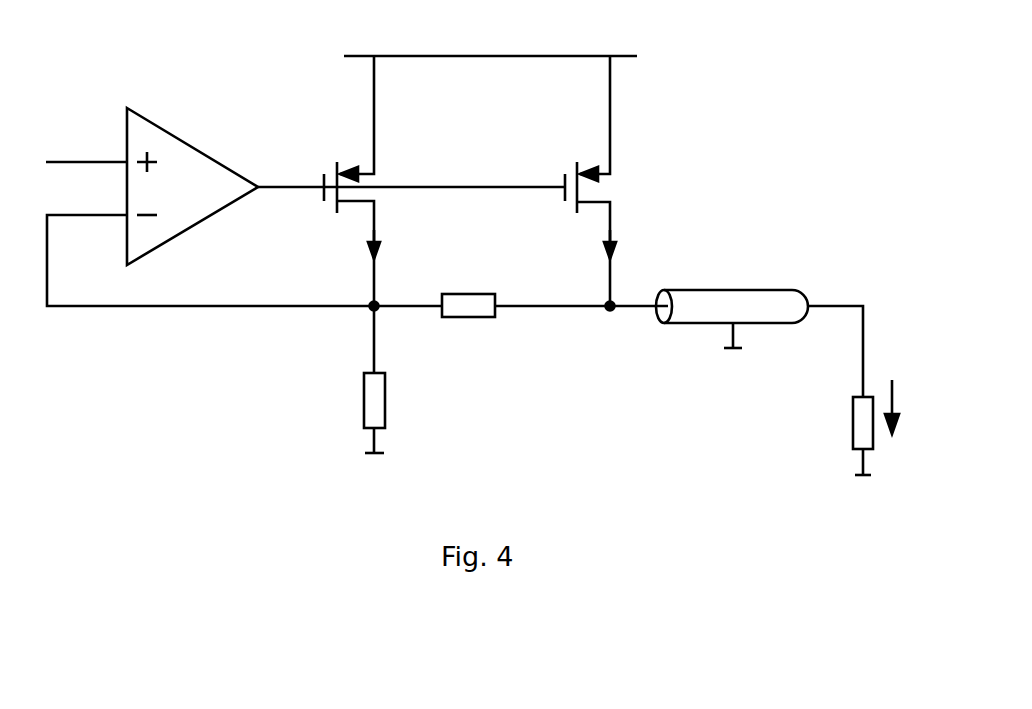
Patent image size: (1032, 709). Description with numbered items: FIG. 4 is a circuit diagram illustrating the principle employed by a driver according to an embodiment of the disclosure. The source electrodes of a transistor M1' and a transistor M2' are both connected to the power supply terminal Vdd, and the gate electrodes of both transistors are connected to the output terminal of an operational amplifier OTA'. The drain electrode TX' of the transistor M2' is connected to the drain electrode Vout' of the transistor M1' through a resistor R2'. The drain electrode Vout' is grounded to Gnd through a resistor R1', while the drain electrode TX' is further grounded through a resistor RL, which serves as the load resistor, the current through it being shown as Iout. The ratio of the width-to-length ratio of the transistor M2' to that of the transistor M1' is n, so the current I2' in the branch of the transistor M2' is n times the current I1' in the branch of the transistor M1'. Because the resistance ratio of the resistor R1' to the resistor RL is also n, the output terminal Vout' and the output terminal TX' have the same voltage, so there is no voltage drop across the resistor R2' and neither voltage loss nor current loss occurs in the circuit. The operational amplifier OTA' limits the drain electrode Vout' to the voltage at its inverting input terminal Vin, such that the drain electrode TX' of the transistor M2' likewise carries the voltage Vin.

The operational amplifier OTA' is at (225, 186).
The inverting input terminal Vin is at (76, 149).
The power supply terminal Vdd is at (490, 40).
The transistor M1' is at (444, 181).
The transistor M2' is at (607, 181).
The current in branch of transistor M1' I1' is at (387, 245).
The current in branch of transistor M2' I2' is at (623, 244).
The drain electrode of transistor M1' Vout' is at (345, 295).
The resistor R1' is at (395, 379).
The resistor R2' is at (555, 323).
The drain electrode of transistor M2' TX' is at (590, 294).
The load resistor RL is at (845, 436).
The output current Iout is at (905, 407).
The ground Gnd is at (642, 412).